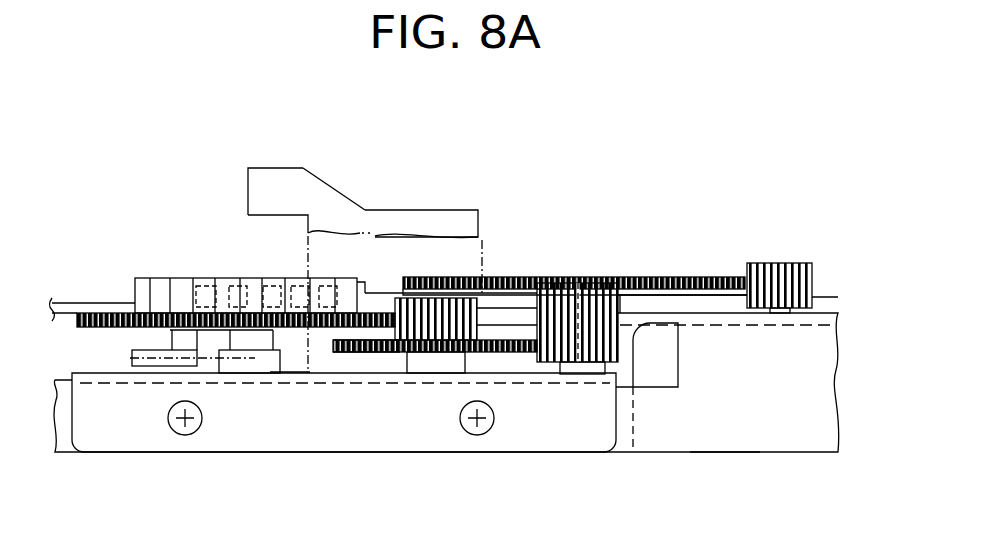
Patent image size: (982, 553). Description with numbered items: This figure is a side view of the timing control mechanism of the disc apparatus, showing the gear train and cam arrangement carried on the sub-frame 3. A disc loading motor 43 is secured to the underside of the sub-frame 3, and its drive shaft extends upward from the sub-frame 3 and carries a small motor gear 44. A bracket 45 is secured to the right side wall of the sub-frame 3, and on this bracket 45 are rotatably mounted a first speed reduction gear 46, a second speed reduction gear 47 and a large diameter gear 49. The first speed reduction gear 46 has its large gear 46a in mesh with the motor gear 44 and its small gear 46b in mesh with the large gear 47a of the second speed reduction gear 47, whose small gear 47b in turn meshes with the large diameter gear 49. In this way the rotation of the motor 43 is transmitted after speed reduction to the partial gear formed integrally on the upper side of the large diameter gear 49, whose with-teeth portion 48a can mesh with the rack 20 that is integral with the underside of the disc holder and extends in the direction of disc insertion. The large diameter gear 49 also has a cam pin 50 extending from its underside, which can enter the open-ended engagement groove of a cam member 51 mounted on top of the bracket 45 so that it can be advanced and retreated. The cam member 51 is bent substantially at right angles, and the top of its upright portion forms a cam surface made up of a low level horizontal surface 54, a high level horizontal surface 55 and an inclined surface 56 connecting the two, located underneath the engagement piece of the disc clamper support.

The sub-frame 3 is at (798, 435).
The rack 20 is at (382, 290).
The disc loading motor 43 is at (712, 430).
The motor gear 44 is at (768, 264).
The bracket 45 is at (266, 440).
The first speed reduction gear 46 is at (660, 280).
The large gear 46a is at (570, 284).
The small gear 46b is at (582, 364).
The second speed reduction gear 47 is at (388, 356).
The large gear 47a is at (352, 352).
The small gear 47b is at (485, 310).
The with-teeth portion 48a is at (172, 277).
The large diameter gear 49 is at (100, 328).
The cam pin 50 is at (178, 358).
The cam member 51 is at (246, 190).
The low level horizontal surface 54 is at (431, 209).
The high level horizontal surface 55 is at (273, 167).
The inclined surface 56 is at (338, 190).